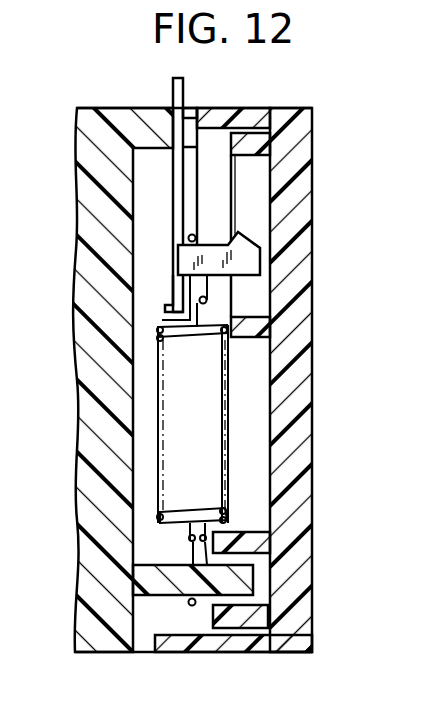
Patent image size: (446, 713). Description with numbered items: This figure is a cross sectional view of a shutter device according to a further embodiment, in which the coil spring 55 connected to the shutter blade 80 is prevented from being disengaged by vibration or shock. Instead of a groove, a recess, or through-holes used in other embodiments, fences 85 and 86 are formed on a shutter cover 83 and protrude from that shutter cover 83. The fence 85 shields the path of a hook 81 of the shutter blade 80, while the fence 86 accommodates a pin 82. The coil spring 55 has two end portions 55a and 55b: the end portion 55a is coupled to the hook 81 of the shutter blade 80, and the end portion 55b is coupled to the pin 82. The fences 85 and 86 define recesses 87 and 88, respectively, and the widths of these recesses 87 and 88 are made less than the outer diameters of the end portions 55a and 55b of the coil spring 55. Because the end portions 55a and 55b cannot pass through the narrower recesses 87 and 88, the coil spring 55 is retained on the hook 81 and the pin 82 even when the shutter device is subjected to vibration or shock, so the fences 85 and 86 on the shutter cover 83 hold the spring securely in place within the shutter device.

The shutter cover 83 is at (280, 110).
The shutter blade 80 is at (175, 200).
The recess 87 is at (250, 195).
The hook 81 is at (250, 258).
The end portion of coil spring 55a is at (207, 300).
The fence 85 is at (247, 338).
The coil spring 55 is at (193, 512).
The end portion of coil spring 55b is at (192, 606).
The fence 86 is at (240, 532).
The pin 82 is at (243, 580).
The recess 88 is at (257, 605).